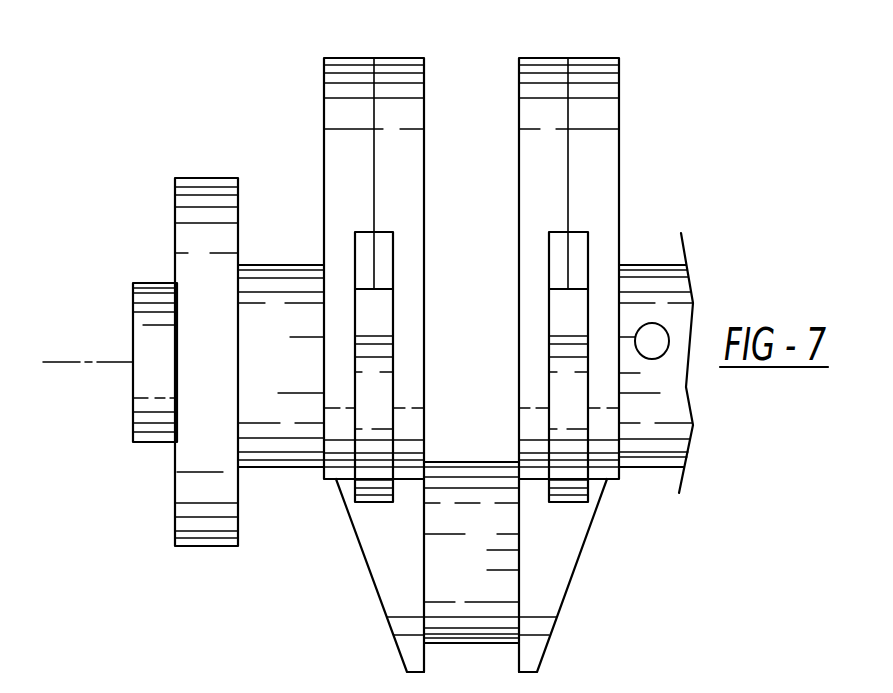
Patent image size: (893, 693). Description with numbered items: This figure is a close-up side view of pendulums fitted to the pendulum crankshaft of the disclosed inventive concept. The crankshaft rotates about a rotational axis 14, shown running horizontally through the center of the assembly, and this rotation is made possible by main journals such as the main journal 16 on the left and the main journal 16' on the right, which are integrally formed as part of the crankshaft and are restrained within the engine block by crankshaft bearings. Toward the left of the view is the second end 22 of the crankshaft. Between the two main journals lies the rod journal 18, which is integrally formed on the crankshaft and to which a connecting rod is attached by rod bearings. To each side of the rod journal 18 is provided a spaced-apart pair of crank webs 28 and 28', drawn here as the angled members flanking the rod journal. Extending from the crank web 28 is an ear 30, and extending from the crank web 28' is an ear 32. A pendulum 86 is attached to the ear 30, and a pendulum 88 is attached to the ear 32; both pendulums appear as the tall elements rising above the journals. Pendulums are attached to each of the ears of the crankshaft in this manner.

The rotational axis 14 is at (66, 362).
The main journal 16 is at (228, 308).
The main journal 16' is at (666, 398).
The rod journal 18 is at (485, 549).
The second end 22 is at (206, 202).
The crank web 28 is at (360, 575).
The crank web 28' is at (589, 575).
The ear 30 is at (373, 466).
The ear 32 is at (575, 326).
The pendulum 86 is at (351, 76).
The pendulum 88 is at (545, 76).